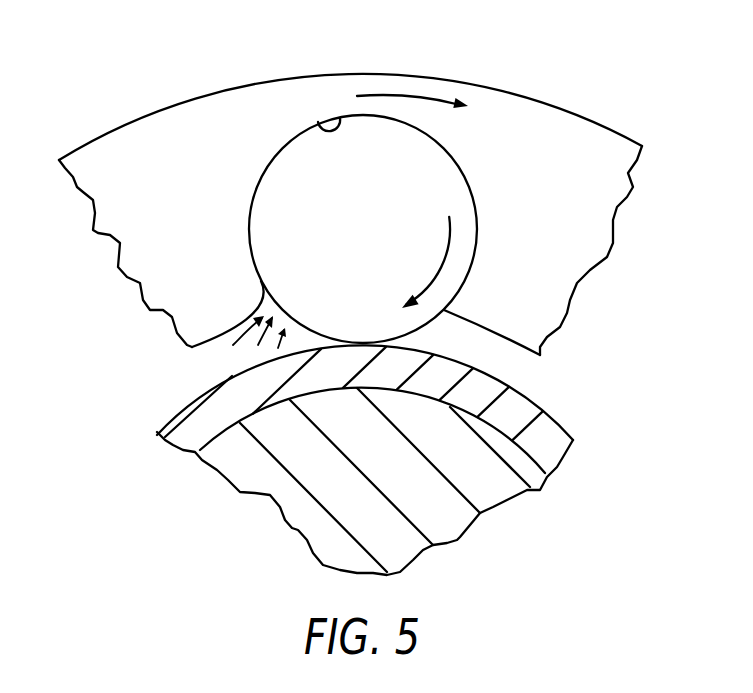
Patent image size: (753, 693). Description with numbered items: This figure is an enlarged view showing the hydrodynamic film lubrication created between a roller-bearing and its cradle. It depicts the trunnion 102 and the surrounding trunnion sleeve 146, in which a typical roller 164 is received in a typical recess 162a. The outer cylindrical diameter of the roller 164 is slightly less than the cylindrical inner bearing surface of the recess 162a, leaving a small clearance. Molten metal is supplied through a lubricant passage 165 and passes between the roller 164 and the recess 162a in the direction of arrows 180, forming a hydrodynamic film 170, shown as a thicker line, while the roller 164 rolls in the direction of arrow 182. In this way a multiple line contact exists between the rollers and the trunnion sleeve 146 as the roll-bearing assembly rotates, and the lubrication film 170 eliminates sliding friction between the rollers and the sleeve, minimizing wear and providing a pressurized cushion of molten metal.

The trunnion 102 is at (455, 519).
The trunnion sleeve 146 is at (542, 425).
The recess 162a is at (340, 118).
The roller 164 is at (437, 175).
The lubricant passage 165 is at (110, 400).
The hydrodynamic film 170 is at (278, 147).
The arrows 180 is at (237, 340).
The arrow 182 is at (442, 265).